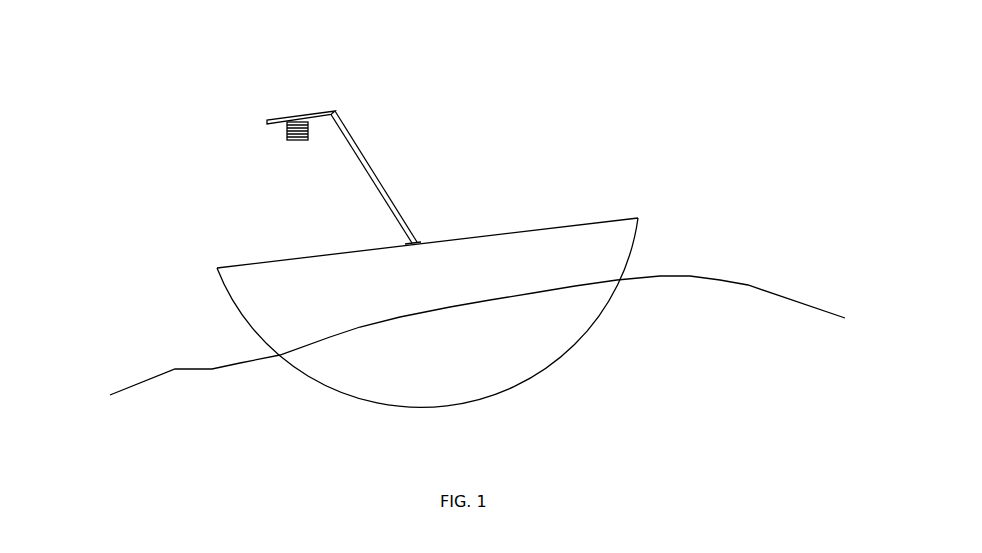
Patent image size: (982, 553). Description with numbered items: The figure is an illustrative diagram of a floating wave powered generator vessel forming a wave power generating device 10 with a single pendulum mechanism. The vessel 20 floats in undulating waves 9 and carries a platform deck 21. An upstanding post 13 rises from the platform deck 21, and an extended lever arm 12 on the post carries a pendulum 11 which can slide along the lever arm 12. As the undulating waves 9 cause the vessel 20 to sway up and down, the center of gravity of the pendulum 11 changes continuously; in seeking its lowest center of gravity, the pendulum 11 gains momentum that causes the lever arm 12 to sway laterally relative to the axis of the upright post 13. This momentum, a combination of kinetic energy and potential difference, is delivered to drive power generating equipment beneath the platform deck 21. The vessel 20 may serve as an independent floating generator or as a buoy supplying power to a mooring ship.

The undulating waves 9 is at (153, 372).
The wave power generating device 10 is at (510, 38).
The pendulum 11 is at (287, 143).
The lever arm 12 is at (315, 113).
The upstanding post 13 is at (391, 194).
The vessel 20 is at (523, 342).
The platform deck 21 is at (552, 227).